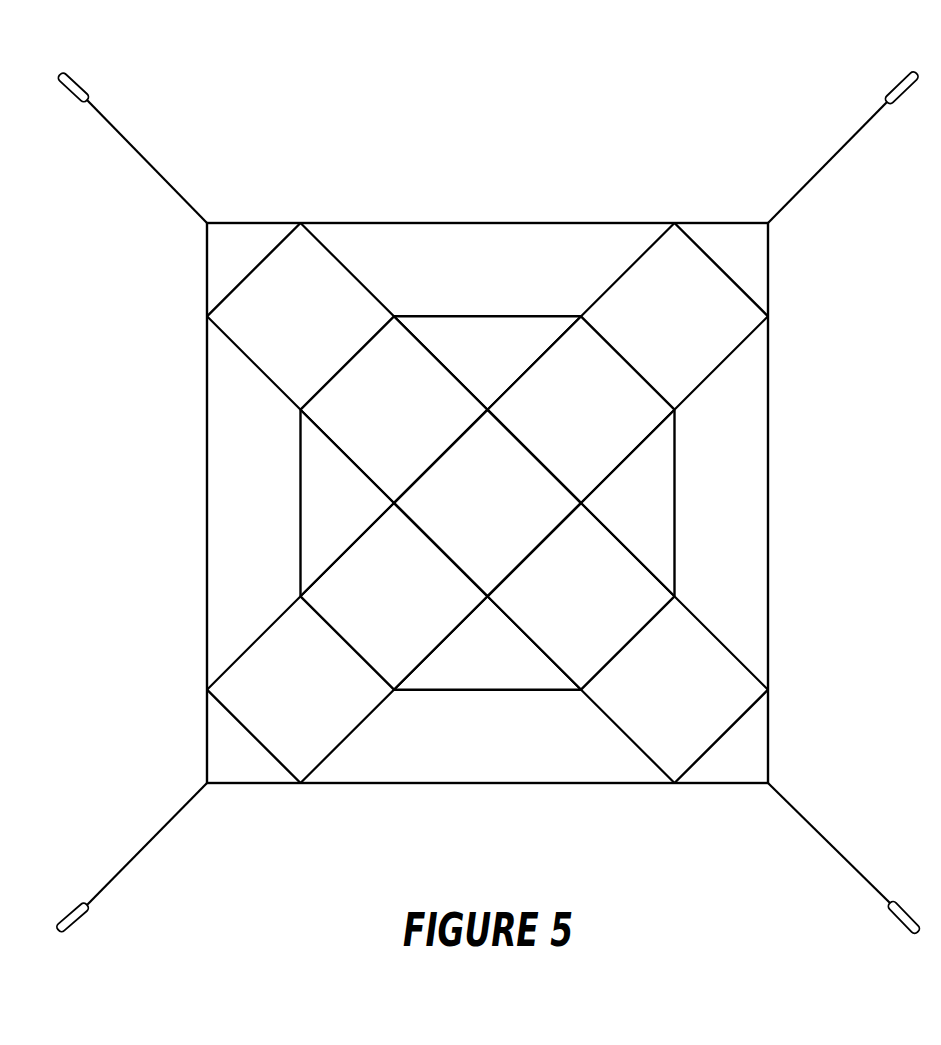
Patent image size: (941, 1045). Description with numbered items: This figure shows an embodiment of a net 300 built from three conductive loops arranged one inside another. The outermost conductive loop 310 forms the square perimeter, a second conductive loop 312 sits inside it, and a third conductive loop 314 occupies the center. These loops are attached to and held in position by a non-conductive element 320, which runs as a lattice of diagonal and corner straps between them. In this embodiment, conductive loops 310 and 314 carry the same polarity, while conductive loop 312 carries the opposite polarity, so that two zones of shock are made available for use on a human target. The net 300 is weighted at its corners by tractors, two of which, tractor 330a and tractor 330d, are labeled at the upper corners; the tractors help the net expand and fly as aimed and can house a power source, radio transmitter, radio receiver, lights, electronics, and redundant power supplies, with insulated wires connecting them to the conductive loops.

The net 300 is at (270, 80).
The conductive loop 310 is at (483, 222).
The conductive loop 312 is at (483, 315).
The conductive loop 314 is at (538, 456).
The non-conductive element 320 is at (251, 222).
The tractor 330a is at (897, 86).
The tractor 330d is at (80, 84).